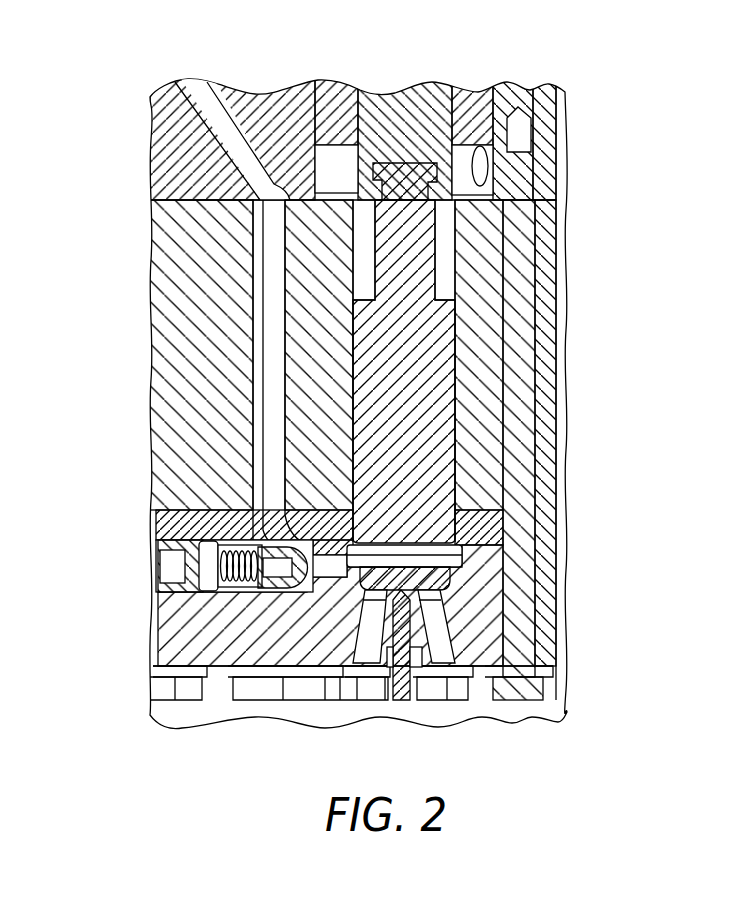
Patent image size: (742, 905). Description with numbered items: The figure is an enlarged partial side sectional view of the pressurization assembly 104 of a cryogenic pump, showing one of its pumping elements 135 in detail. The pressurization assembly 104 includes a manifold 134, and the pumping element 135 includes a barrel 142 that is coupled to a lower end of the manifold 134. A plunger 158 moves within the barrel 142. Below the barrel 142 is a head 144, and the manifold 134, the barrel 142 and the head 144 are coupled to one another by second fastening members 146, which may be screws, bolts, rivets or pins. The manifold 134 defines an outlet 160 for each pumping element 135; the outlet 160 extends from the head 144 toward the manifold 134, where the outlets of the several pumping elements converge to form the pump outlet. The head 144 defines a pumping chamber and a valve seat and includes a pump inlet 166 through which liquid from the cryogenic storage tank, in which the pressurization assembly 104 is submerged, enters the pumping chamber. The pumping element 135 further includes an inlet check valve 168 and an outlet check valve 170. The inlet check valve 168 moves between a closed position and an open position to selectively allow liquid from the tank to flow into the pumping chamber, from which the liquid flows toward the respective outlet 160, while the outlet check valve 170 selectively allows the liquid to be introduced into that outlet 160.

The pressurization assembly 104 is at (643, 80).
The manifold 134 is at (269, 103).
The pumping element 135 is at (573, 197).
The outlet 160 is at (222, 137).
The barrel 142 is at (545, 400).
The second fastening member 146 is at (538, 453).
The plunger 158 is at (447, 337).
The inlet check valve 168 is at (453, 567).
The head 144 is at (547, 598).
The pump inlet 166 is at (455, 627).
The outlet check valve 170 is at (252, 547).